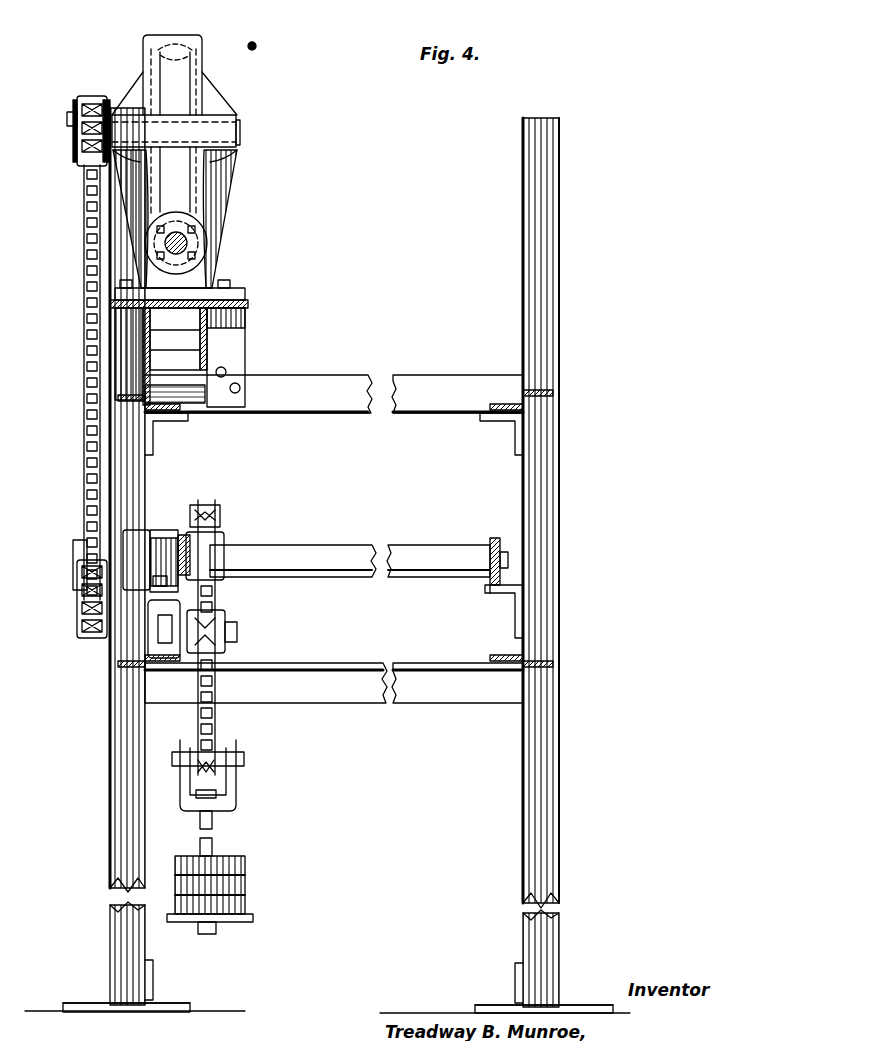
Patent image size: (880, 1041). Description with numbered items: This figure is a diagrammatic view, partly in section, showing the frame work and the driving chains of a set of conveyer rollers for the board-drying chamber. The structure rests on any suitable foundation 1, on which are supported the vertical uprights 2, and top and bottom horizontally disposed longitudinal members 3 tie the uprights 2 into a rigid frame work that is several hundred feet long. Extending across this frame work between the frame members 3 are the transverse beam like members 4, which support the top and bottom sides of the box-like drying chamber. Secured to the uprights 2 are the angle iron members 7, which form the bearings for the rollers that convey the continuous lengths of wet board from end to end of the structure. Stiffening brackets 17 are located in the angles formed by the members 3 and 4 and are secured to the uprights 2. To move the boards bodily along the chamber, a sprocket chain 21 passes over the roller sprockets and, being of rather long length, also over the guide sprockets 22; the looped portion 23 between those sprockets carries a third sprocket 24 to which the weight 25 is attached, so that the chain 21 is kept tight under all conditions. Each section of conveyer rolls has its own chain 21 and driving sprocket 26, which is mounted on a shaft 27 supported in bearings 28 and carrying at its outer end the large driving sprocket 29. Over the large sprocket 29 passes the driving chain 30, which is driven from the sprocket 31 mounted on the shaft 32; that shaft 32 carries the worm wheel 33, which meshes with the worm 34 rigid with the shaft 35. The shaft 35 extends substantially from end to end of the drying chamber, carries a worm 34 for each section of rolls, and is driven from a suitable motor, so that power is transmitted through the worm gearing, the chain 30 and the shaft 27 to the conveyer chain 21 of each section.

The foundation 1 is at (80, 1002).
The uprights 2 is at (120, 258).
The top and bottom horizontally disposed longitudinal members 3 is at (130, 397).
The transverse beam like members 4 is at (320, 383).
The angle iron members 7 is at (492, 540).
The stiffening brackets 17 is at (153, 431).
The sprocket chain 21 is at (212, 532).
The guide sprockets 22 is at (222, 625).
The looped portion 23 is at (218, 688).
The third sprocket 24 is at (212, 770).
The weight 25 is at (240, 858).
The driving sprocket 26 is at (216, 552).
The shaft 27 is at (340, 548).
The bearings 28 is at (160, 540).
The large driving sprocket 29 is at (78, 606).
The driving chain 30 is at (84, 210).
The sprocket 31 is at (80, 100).
The shaft 32 is at (218, 120).
The worm wheel 33 is at (180, 48).
The worm 34 is at (213, 210).
The shaft 35 is at (195, 244).